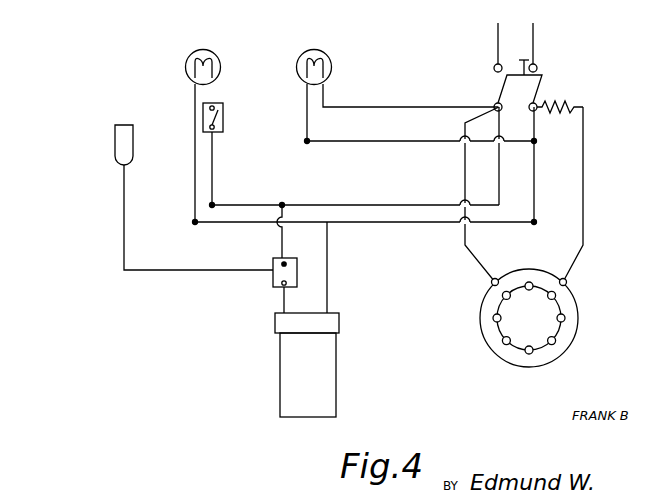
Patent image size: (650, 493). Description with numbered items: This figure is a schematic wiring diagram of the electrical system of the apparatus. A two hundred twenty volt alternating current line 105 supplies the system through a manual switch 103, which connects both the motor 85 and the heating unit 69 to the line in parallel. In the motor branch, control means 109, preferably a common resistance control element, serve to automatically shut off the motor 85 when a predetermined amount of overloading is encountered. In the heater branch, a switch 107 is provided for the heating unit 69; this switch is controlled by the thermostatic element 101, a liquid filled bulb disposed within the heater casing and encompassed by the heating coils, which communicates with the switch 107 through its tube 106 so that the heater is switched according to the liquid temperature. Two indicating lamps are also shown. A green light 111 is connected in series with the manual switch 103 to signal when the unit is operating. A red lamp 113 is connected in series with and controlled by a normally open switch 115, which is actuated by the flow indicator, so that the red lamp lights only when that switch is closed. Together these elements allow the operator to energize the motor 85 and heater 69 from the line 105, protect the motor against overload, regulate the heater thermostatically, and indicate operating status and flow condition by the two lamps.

The red lamp 113 is at (214, 63).
The green light 111 is at (325, 63).
The normally open switch 115 is at (223, 116).
The A. C. line 105 is at (515, 38).
The manual switch 103 is at (538, 68).
The control means 109 is at (578, 107).
The motor 85 is at (566, 305).
The thermostatic element 101 is at (122, 143).
The tube 106 is at (124, 218).
The thermostatic switch 107 is at (273, 280).
The heating unit 69 is at (325, 363).